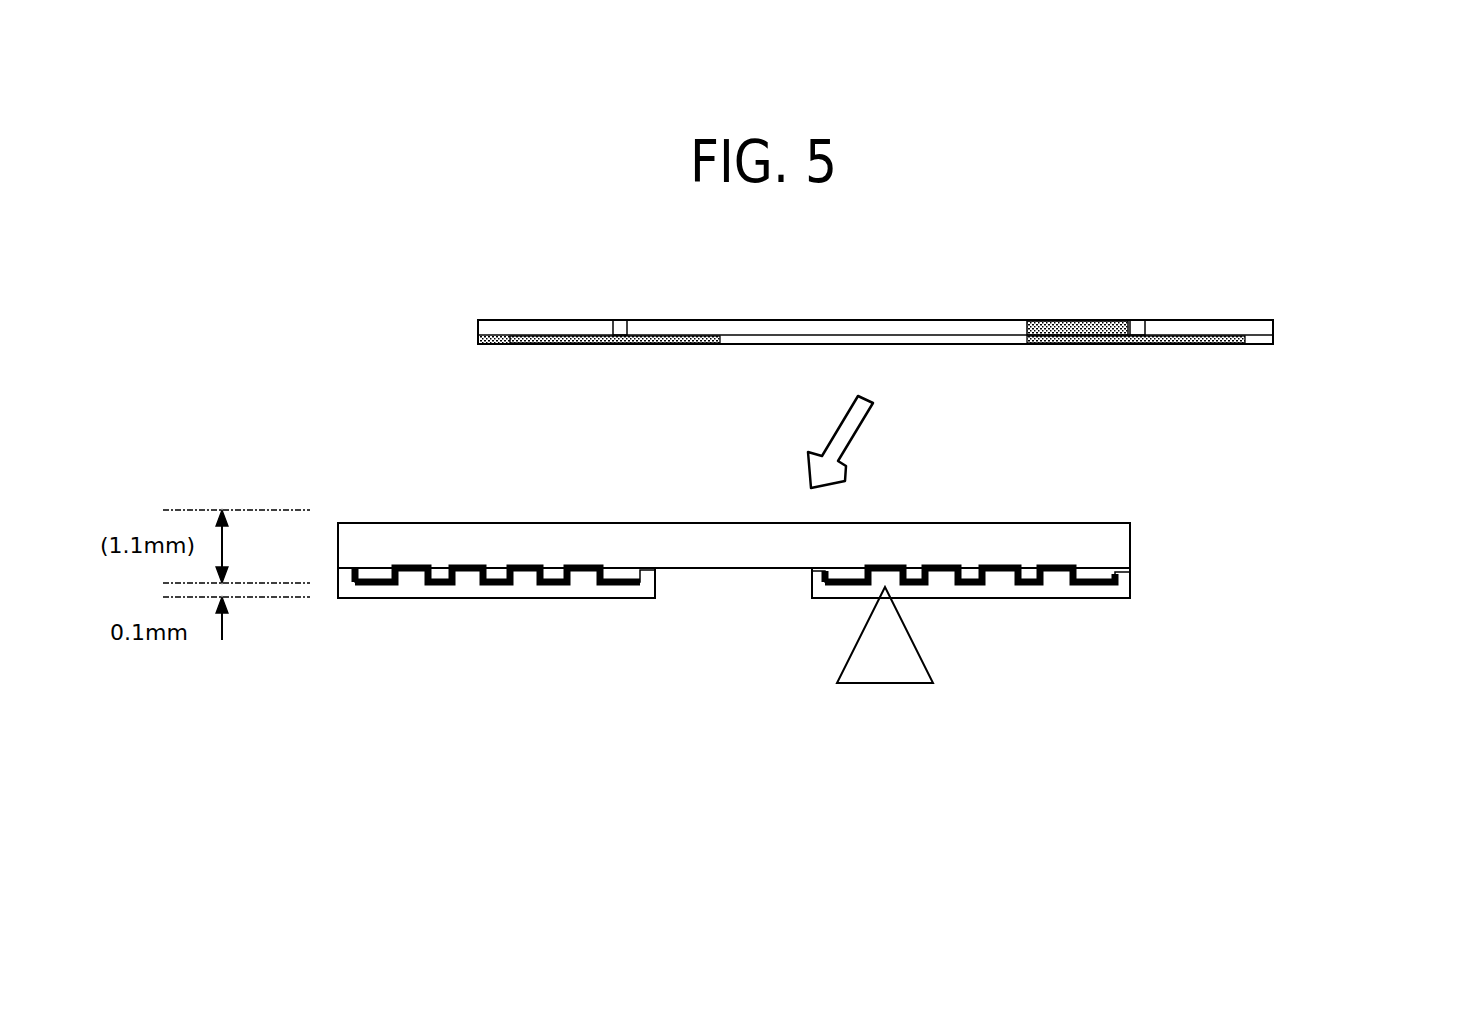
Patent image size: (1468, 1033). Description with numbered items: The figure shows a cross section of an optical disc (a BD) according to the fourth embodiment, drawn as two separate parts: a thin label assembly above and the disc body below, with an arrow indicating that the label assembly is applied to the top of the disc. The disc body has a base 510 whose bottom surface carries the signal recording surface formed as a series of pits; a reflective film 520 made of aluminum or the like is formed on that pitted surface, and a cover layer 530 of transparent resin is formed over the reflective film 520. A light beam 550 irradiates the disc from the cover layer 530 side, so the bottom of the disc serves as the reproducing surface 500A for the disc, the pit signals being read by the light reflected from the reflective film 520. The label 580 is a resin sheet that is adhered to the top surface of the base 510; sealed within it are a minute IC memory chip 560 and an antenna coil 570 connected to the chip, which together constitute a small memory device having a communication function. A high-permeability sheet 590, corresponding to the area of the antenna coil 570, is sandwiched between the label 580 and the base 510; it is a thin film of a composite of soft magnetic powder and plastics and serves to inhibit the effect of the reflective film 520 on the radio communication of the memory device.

The reproducing surface for the disc 500A is at (797, 629).
The base 510 is at (1117, 542).
The reflective film 520 is at (1090, 580).
The cover layer 530 is at (1095, 598).
The light beam 550 is at (910, 653).
The minute IC memory chip 560 is at (1052, 326).
The antenna coil 570 is at (614, 322).
The label 580 is at (1265, 323).
The high-permeability sheet 590 is at (1137, 345).